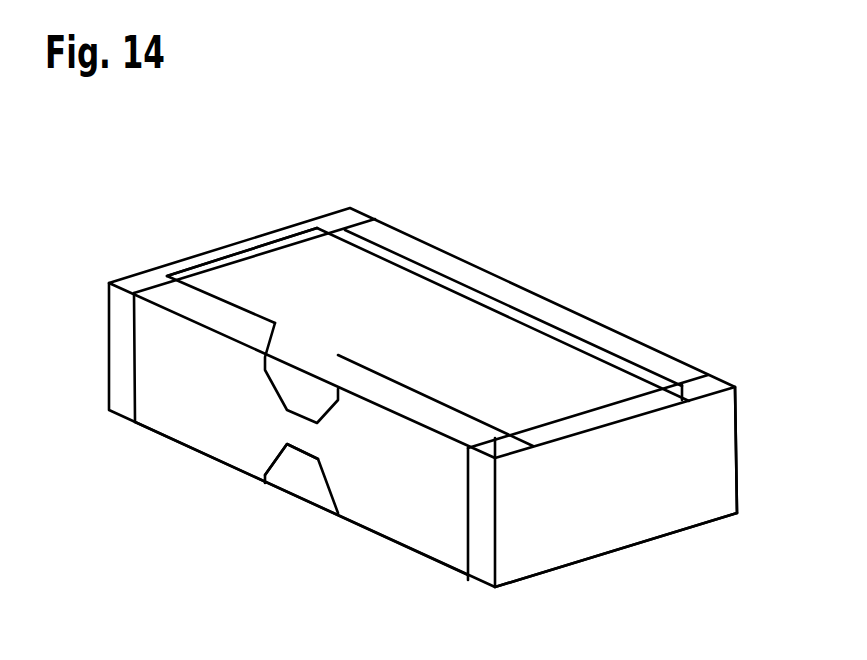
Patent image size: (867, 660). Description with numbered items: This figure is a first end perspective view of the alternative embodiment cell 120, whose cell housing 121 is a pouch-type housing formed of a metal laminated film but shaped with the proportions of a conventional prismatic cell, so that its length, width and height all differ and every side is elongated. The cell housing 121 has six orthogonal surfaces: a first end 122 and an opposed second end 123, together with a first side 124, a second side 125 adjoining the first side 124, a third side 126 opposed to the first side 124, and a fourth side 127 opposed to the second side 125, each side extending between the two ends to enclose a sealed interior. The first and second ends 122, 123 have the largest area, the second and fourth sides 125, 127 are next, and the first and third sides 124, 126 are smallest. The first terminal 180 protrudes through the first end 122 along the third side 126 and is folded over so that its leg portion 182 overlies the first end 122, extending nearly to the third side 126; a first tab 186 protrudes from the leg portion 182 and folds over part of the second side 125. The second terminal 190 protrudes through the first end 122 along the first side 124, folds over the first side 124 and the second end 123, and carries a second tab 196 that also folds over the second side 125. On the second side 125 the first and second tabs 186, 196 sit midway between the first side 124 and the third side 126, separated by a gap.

The cell 120 is at (678, 220).
The cell housing 121 is at (518, 300).
The first end 122 is at (648, 362).
The second end 123 is at (640, 545).
The first side 124 is at (284, 226).
The second side 125 is at (442, 508).
The third side 126 is at (600, 492).
The fourth side 127 is at (603, 325).
The first terminal 180 is at (383, 285).
The leg portion 182 is at (343, 234).
The first tab 186 is at (295, 389).
The second terminal 190 is at (300, 487).
The second tab 196 is at (210, 491).